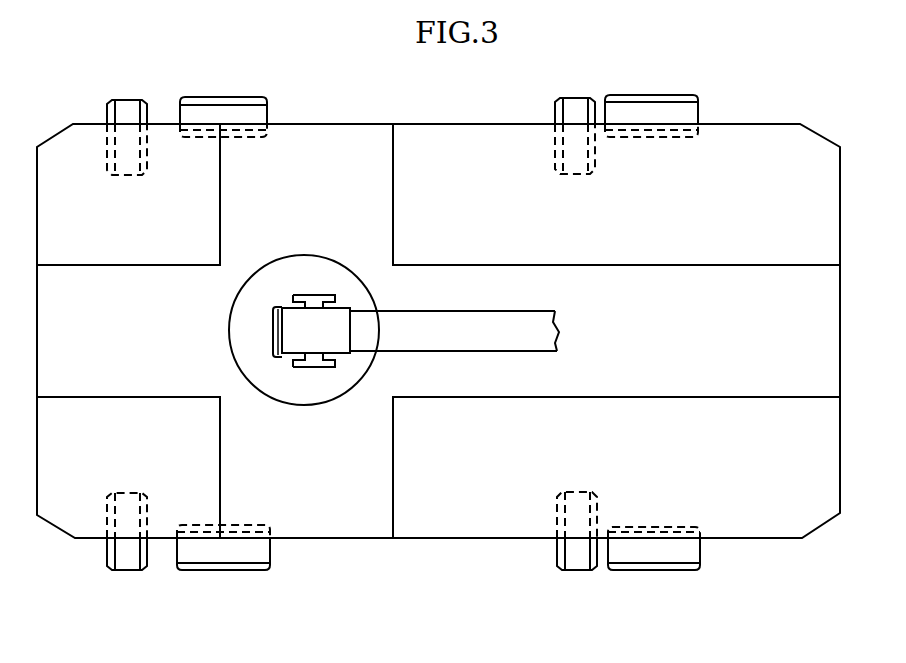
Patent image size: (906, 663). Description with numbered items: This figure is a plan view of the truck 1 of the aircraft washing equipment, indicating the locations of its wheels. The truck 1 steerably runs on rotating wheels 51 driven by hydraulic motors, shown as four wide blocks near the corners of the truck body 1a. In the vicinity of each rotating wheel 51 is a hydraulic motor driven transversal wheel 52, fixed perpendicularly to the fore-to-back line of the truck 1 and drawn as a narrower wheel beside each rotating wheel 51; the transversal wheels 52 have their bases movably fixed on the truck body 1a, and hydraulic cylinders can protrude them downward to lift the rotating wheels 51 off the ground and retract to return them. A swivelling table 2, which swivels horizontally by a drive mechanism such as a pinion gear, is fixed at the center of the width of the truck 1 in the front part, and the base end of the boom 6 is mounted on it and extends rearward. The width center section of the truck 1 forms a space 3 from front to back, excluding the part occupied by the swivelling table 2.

The truck 1 is at (753, 105).
The truck body 1a is at (477, 538).
The swivelling table 2 is at (320, 405).
The space 3 is at (662, 397).
The boom 6 is at (484, 310).
The rotating wheels 51 is at (225, 571).
The transversal wheels 52 is at (133, 571).